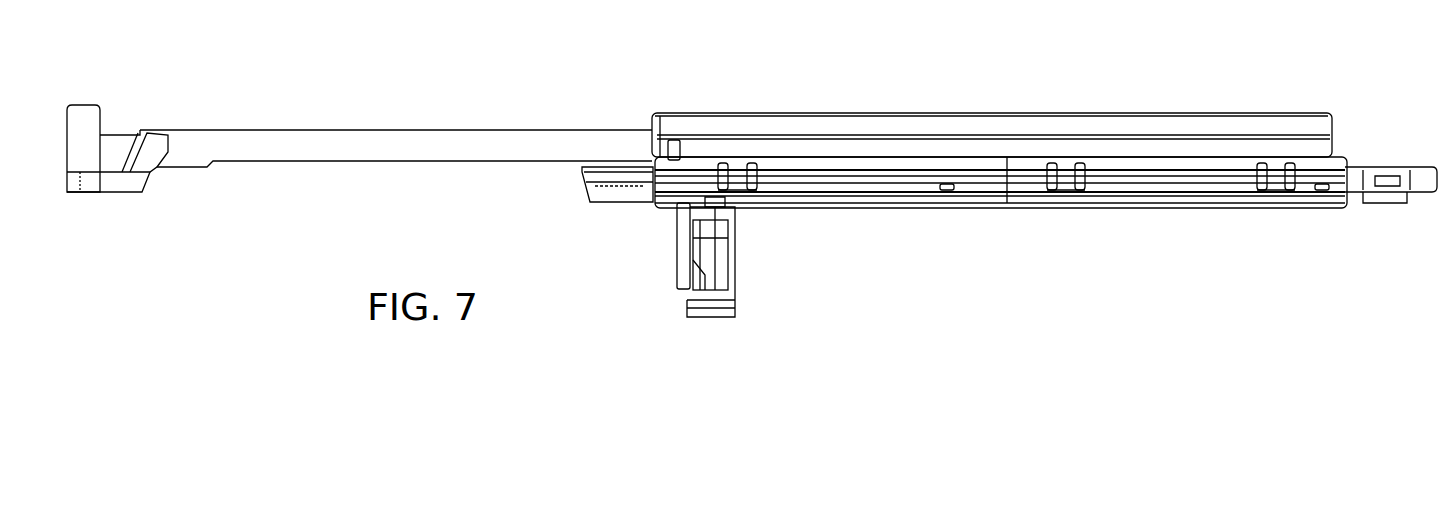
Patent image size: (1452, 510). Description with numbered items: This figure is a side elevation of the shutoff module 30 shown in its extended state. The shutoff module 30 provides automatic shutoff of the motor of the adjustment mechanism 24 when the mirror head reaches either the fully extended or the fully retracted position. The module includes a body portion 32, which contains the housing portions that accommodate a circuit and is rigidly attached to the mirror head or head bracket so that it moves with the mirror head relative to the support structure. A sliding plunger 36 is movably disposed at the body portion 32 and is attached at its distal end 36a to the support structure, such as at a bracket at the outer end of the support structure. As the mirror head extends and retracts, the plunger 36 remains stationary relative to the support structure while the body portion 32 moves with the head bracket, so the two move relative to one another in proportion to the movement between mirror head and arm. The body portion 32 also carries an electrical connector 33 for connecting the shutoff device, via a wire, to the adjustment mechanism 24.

The adjustment mechanism 24 is at (1100, 222).
The shutoff module 30 is at (1015, 108).
The body portion 32 is at (978, 203).
The electrical connector 33 is at (700, 250).
The sliding plunger 36 is at (445, 145).
The distal end 36a is at (100, 130).